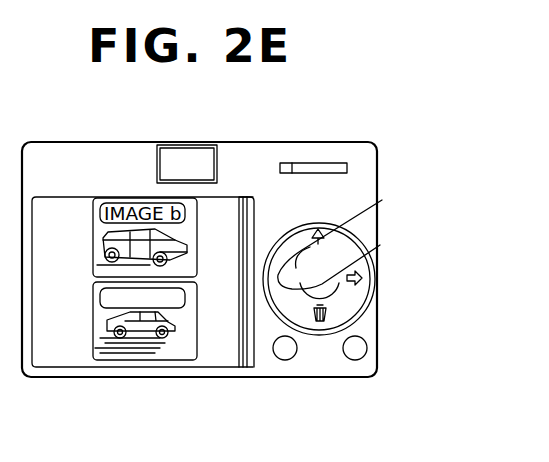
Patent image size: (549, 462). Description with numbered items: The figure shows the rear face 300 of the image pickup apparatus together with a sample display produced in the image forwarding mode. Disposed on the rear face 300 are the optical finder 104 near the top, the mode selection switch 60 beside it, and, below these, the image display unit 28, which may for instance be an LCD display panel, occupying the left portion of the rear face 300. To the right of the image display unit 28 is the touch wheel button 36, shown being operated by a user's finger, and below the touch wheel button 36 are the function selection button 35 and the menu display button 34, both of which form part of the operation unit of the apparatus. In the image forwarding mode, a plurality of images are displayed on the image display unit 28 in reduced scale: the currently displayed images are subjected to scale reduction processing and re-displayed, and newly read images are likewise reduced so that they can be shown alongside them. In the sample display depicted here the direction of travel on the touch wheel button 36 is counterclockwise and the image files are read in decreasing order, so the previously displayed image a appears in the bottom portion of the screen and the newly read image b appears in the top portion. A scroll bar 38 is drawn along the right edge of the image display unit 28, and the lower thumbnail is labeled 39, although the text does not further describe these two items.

The rear face 300 is at (80, 150).
The optical finder 104 is at (198, 155).
The mode selection switch 60 is at (325, 167).
The touch wheel button 36 is at (382, 200).
The scroll bar 38 is at (243, 237).
The image display unit 28 is at (67, 360).
The thumbnail image 39 is at (185, 342).
The function selection button 35 is at (290, 357).
The menu display button 34 is at (357, 357).